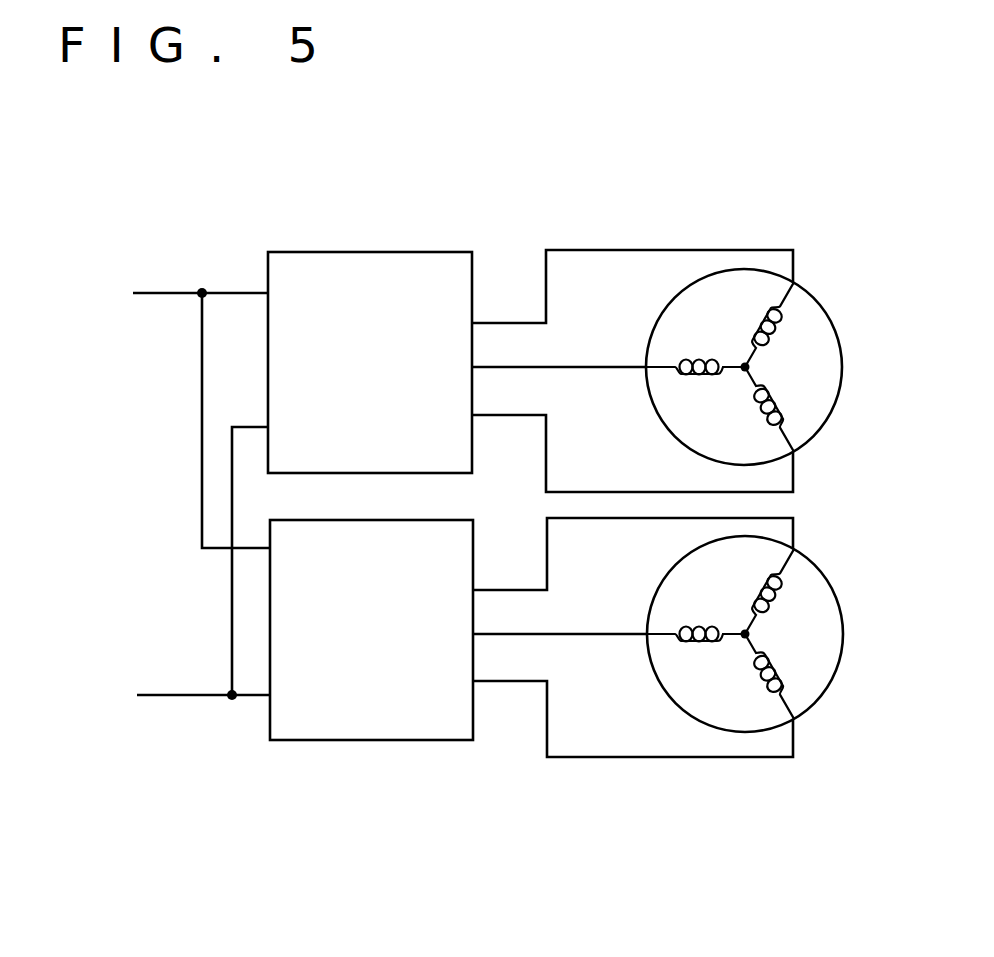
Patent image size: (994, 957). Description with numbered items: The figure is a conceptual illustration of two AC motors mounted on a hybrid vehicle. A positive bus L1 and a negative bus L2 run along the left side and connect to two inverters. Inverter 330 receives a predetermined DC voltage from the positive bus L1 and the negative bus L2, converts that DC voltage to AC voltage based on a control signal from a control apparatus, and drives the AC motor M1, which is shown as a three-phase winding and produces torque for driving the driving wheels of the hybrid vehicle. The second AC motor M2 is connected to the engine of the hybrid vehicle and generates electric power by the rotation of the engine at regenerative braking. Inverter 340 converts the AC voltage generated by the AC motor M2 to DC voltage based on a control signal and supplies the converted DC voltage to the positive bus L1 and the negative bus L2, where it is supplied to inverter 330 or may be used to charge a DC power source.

The inverter 330 is at (372, 252).
The inverter 340 is at (410, 740).
The positive bus L1 is at (155, 293).
The negative bus L2 is at (172, 698).
The AC motor M1 is at (827, 308).
The AC motor M2 is at (827, 576).